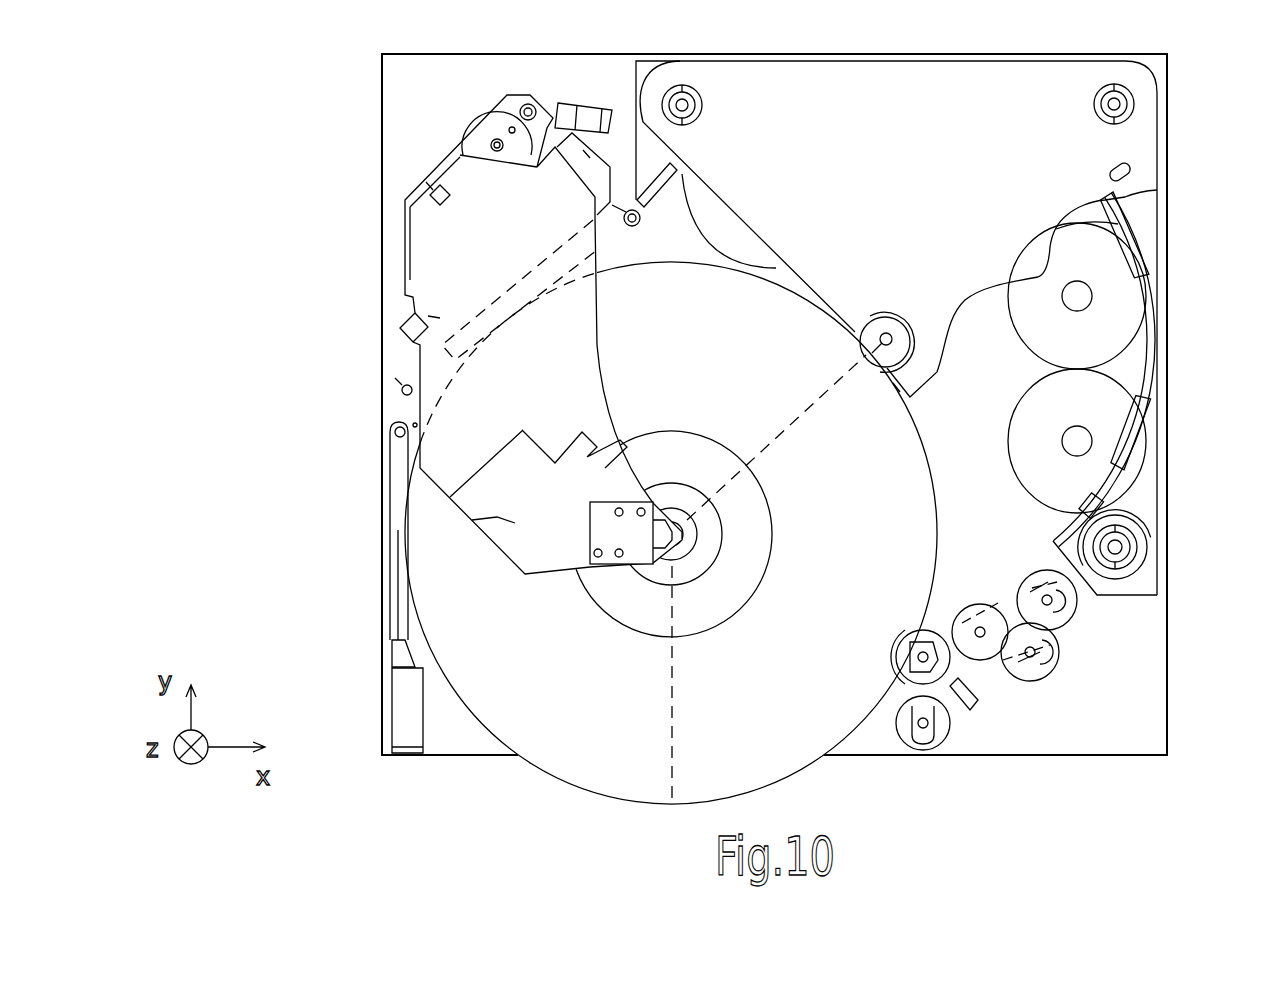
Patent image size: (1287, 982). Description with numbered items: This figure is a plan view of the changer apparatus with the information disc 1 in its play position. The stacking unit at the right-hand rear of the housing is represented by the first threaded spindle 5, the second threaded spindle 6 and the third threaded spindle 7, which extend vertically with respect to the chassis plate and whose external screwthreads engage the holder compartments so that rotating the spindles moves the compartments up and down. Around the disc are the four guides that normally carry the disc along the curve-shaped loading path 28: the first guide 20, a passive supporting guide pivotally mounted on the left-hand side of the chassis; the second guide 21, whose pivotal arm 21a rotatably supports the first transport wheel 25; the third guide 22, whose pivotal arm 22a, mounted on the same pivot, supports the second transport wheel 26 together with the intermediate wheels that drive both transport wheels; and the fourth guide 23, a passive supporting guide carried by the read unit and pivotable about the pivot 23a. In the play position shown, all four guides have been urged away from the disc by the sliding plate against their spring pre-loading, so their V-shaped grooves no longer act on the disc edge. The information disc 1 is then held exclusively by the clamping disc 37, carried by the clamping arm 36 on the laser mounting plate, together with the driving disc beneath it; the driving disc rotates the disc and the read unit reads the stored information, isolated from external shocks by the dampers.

The information disc 1 is at (563, 757).
The first threaded spindle 5 is at (688, 105).
The second threaded spindle 6 is at (1108, 104).
The third threaded spindle 7 is at (1125, 547).
The first guide 20 is at (372, 735).
The second guide 21 is at (941, 716).
The pivotal arm 21a is at (910, 722).
The third guide 22 is at (1048, 628).
The pivotal arm 22a is at (985, 668).
The fourth guide 23 is at (536, 268).
The pivot 23a is at (590, 158).
The first transport wheel 25 is at (928, 740).
The second transport wheel 26 is at (1037, 585).
The loading path 28 is at (817, 405).
The clamping arm 36 is at (552, 318).
The clamping disc 37 is at (698, 452).